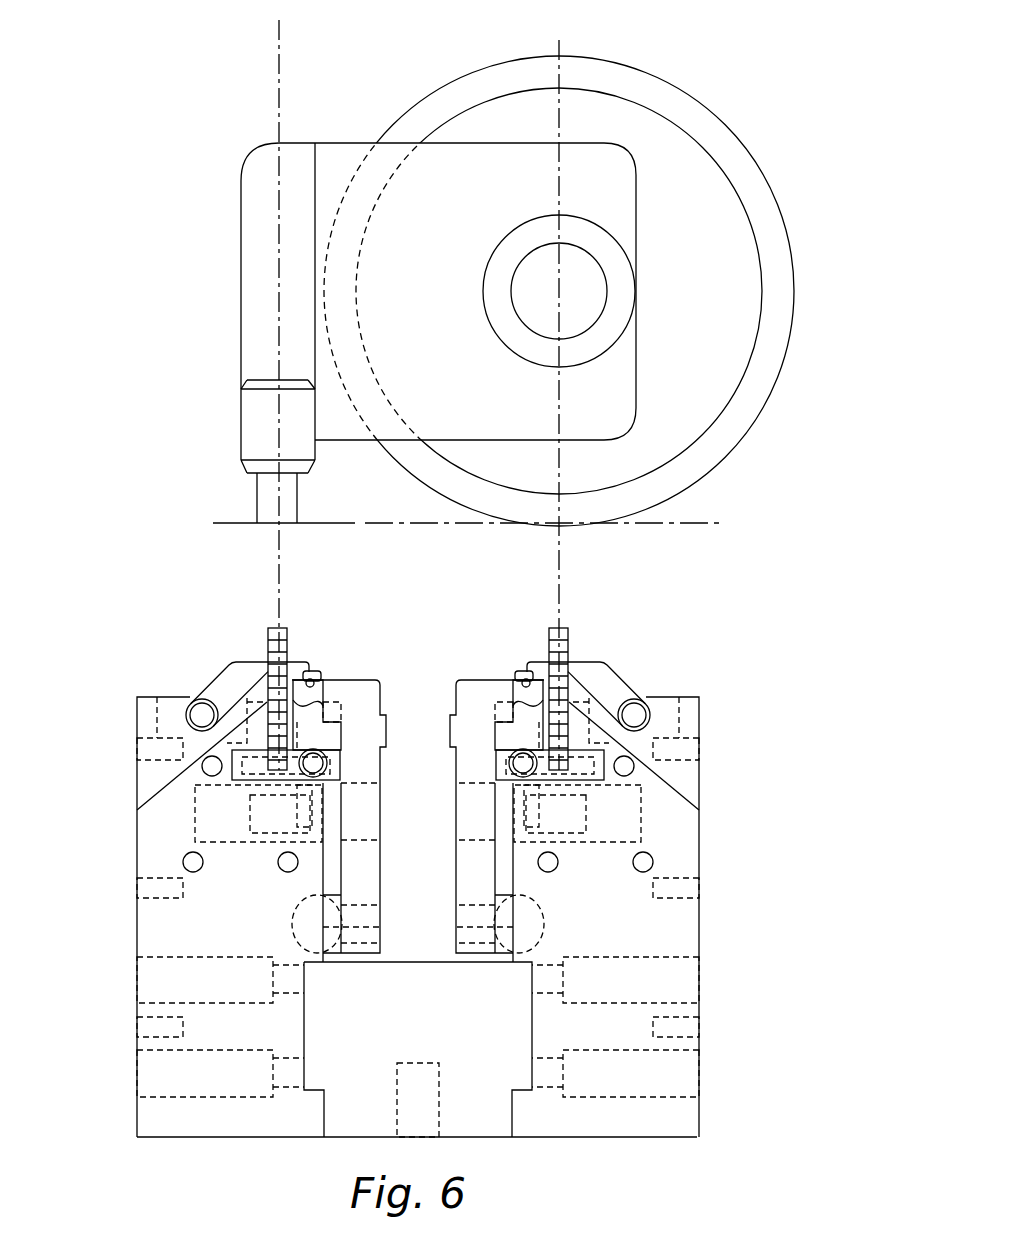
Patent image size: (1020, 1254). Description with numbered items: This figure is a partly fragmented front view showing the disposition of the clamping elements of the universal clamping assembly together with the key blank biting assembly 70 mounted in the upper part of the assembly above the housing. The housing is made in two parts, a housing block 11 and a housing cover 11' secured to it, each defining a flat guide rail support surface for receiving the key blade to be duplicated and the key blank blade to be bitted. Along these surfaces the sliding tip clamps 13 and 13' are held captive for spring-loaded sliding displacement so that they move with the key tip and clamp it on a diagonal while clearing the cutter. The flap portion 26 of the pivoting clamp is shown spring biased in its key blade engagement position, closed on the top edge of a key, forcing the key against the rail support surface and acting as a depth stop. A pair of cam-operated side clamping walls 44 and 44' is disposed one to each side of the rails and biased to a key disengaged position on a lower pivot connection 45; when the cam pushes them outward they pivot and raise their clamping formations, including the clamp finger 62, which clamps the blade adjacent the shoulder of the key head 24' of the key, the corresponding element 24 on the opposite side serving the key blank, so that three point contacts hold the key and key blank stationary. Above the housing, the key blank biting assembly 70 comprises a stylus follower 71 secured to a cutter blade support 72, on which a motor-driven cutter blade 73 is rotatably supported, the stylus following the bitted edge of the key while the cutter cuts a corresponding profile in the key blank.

The housing block 11 is at (224, 908).
The housing cover 11' is at (612, 908).
The sliding tip clamp 13 is at (334, 651).
The sliding tip clamp 13' is at (504, 658).
The threaded adjusting rod 24 is at (248, 675).
The key head 24' is at (584, 672).
The flap portion 26 is at (230, 680).
The side clamping wall 44 is at (375, 872).
The side clamping wall 44' is at (460, 872).
The lower pivot connection 45 is at (317, 927).
The clamp finger 62 is at (320, 702).
The key blank biting assembly 70 is at (200, 293).
The stylus follower 71 is at (257, 497).
The cutter blade support 72 is at (255, 202).
The cutter blade 73 is at (721, 431).